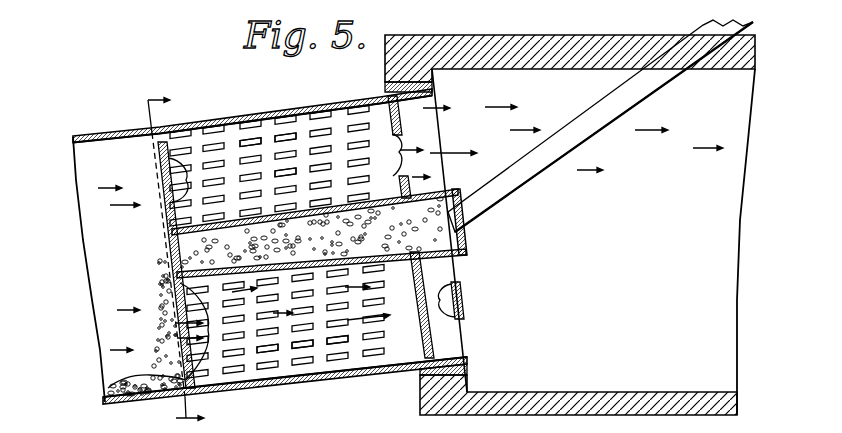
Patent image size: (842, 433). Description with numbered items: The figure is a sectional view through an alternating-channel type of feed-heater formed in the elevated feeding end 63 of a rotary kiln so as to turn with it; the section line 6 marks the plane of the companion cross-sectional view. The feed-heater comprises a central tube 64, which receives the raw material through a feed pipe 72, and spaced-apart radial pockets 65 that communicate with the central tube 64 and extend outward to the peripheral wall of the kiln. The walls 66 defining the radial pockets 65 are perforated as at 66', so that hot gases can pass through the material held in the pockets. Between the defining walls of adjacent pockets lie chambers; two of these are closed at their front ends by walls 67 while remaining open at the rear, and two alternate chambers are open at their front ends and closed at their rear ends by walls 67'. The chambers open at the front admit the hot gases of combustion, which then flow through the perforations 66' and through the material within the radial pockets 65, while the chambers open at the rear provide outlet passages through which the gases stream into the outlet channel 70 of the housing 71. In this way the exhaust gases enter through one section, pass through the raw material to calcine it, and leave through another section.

The section line 6- 6 is at (187, 251).
The elevated feeding end of the kiln 63 is at (229, 116).
The central tube 64 is at (432, 262).
The radial pockets 65 is at (393, 150).
The walls 66 is at (277, 248).
The perforations 66' is at (296, 251).
The front end walls 67 is at (158, 269).
The rear end walls 67' is at (495, 300).
The outlet channel 70 is at (587, 242).
The housing 71 is at (553, 44).
The feed pipe 72 is at (712, 32).